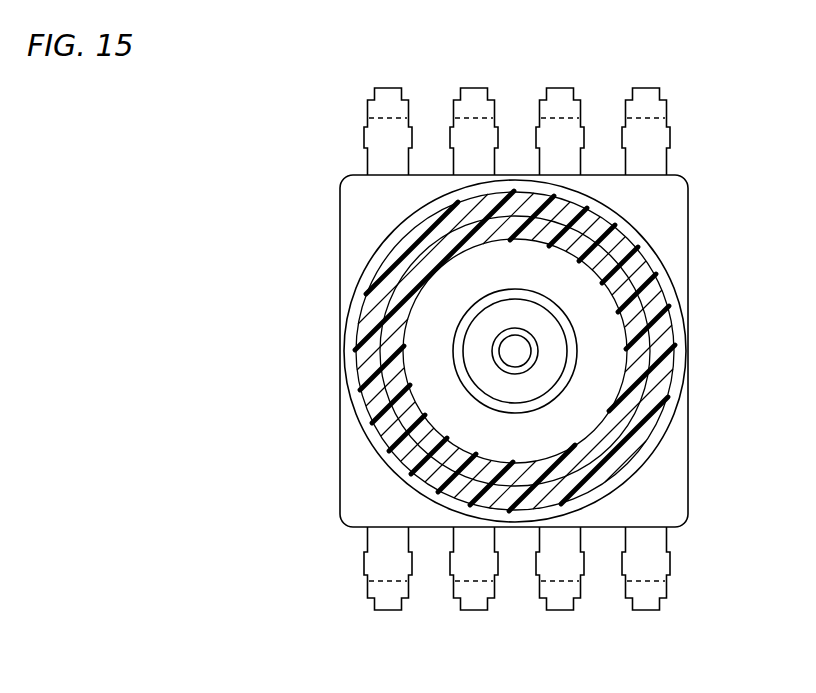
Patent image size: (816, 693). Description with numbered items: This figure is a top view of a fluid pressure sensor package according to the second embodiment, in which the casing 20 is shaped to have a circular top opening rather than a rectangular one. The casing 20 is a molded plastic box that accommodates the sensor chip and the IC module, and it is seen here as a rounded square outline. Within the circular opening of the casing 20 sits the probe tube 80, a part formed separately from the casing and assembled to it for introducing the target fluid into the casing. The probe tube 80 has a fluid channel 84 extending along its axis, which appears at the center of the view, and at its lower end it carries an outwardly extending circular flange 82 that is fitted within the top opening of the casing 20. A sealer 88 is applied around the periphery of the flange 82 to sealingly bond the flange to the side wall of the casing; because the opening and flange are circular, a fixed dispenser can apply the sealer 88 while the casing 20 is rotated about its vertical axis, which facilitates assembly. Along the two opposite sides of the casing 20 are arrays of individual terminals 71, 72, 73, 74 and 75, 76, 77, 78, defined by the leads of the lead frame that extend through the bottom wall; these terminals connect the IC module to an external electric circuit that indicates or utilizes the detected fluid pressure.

The casing 20 is at (344, 466).
The terminal 71 is at (393, 602).
The terminal 72 is at (478, 600).
The terminal 73 is at (566, 603).
The terminal 74 is at (651, 603).
The terminal 75 is at (395, 86).
The terminal 76 is at (466, 86).
The terminal 77 is at (563, 88).
The terminal 78 is at (636, 86).
The probe tube 80 is at (577, 357).
The flange 82 is at (420, 375).
The fluid channel 84 is at (518, 348).
The sealer 88 is at (397, 255).